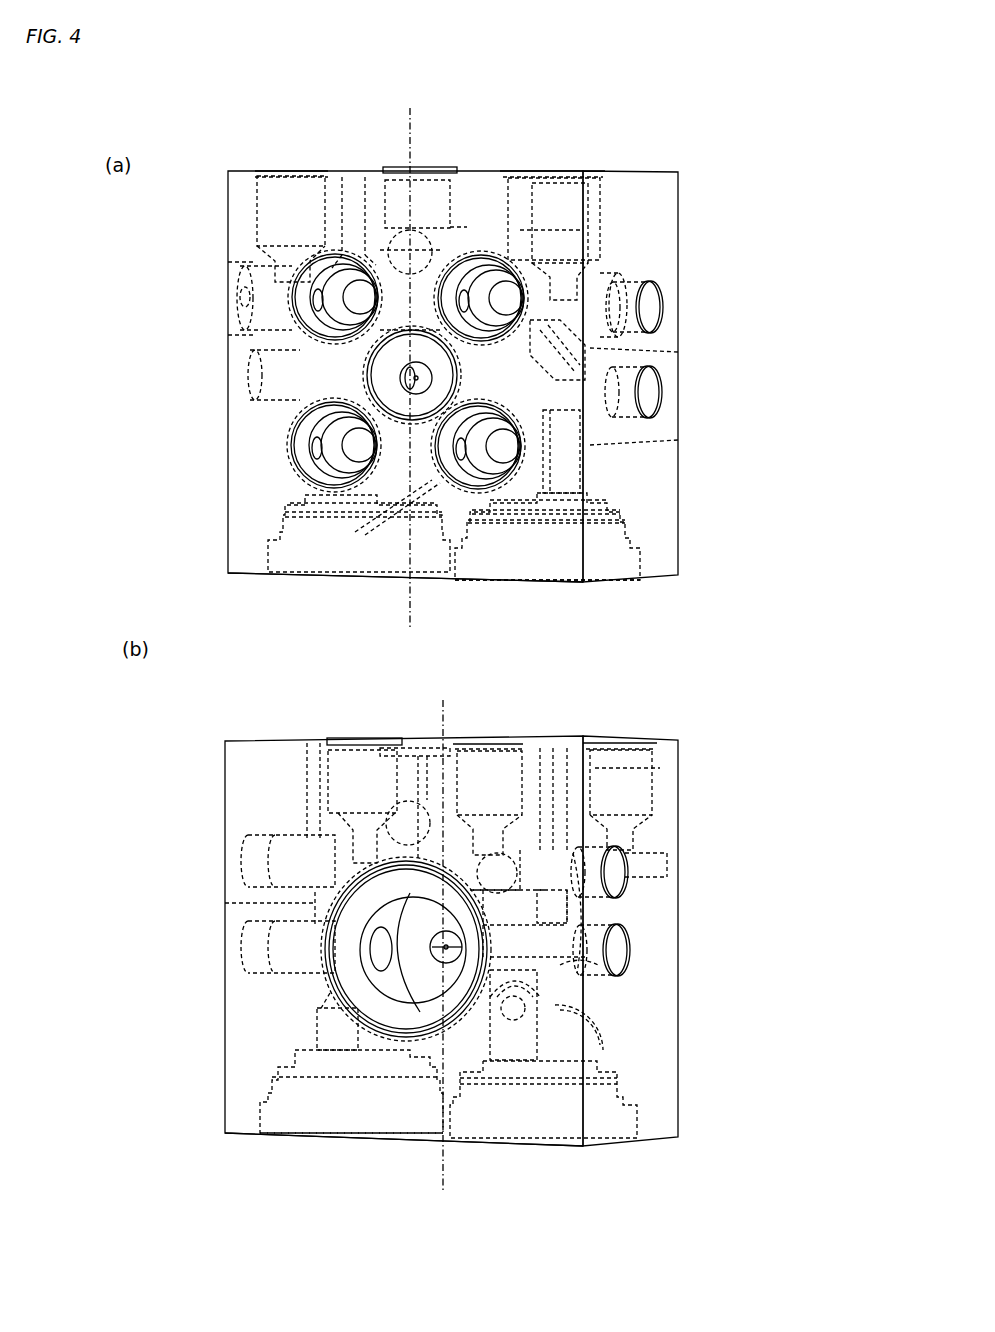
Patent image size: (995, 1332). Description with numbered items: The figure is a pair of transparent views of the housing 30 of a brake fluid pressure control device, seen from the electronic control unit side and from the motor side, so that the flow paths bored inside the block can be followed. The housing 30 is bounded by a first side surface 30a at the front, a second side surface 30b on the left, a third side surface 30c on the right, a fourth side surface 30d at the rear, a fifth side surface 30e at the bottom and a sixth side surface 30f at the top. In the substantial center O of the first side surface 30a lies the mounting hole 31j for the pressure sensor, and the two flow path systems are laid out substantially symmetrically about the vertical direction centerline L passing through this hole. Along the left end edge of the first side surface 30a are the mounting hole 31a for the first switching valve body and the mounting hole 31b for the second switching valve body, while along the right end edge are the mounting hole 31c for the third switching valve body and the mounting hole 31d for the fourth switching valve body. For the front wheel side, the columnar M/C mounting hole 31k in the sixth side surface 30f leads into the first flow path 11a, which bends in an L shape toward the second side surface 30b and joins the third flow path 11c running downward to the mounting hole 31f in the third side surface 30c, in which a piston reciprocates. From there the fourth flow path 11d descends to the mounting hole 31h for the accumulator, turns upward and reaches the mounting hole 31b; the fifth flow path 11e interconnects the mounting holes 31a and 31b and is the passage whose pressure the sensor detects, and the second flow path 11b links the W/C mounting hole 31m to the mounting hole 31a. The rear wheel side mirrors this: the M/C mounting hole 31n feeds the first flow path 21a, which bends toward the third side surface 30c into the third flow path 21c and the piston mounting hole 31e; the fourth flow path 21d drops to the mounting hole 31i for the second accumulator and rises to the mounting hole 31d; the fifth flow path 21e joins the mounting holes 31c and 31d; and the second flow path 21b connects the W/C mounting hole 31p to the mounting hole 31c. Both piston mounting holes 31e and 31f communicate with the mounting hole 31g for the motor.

The housing 30 is at (489, 108).
The first side surface 30a is at (430, 485).
The second side surface 30b is at (240, 263).
The third side surface 30c is at (665, 207).
The fourth side surface 30d is at (478, 1040).
The fifth side surface 30e is at (502, 582).
The sixth side surface 30f is at (476, 172).
The first flow path 11a is at (487, 833).
The second flow path 11b is at (290, 300).
The third flow path 11c is at (567, 913).
The fourth flow path 11d is at (355, 532).
The fifth flow path 11e is at (330, 410).
The first flow path 21a is at (620, 283).
The second flow path 21b is at (660, 313).
The third flow path 21c is at (598, 352).
The fourth flow path 21d is at (578, 470).
The fifth flow path 21e is at (640, 375).
The mounting hole 31a is at (325, 330).
The mounting hole 31b is at (313, 448).
The mounting hole 31c is at (500, 307).
The mounting hole 31d is at (465, 490).
The mounting hole 31e is at (660, 397).
The mounting hole 31f is at (372, 378).
The mounting hole 31g is at (408, 997).
The mounting hole 31h is at (285, 562).
The mounting hole 31i is at (553, 568).
The mounting hole 31j is at (403, 370).
The M/C mounting hole 31k is at (393, 178).
The W/C mounting hole 31m is at (276, 171).
The M/C mounting hole 31n is at (540, 178).
The W/C mounting hole 31p is at (578, 210).
The center O is at (416, 378).
The vertical direction centerline L is at (400, 125).